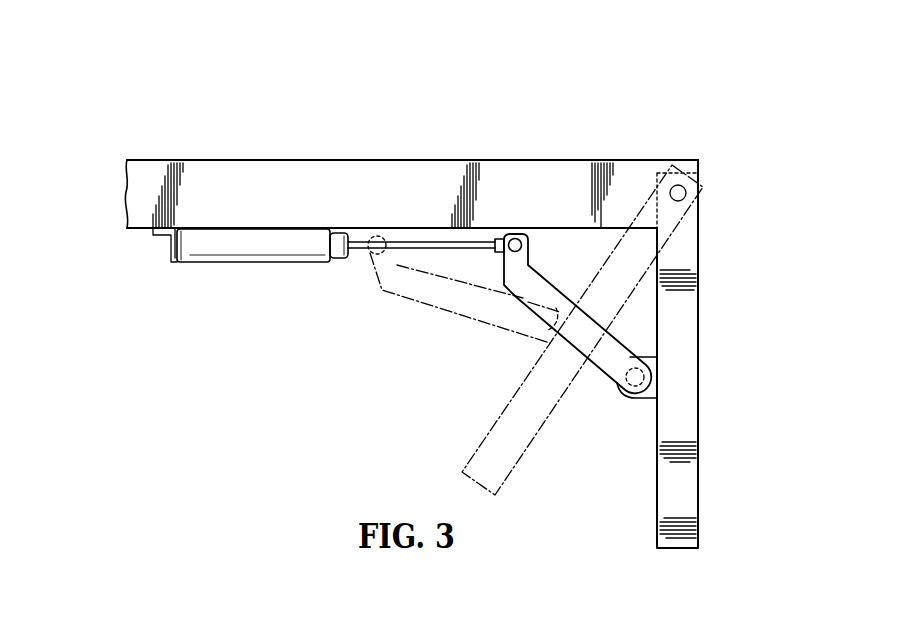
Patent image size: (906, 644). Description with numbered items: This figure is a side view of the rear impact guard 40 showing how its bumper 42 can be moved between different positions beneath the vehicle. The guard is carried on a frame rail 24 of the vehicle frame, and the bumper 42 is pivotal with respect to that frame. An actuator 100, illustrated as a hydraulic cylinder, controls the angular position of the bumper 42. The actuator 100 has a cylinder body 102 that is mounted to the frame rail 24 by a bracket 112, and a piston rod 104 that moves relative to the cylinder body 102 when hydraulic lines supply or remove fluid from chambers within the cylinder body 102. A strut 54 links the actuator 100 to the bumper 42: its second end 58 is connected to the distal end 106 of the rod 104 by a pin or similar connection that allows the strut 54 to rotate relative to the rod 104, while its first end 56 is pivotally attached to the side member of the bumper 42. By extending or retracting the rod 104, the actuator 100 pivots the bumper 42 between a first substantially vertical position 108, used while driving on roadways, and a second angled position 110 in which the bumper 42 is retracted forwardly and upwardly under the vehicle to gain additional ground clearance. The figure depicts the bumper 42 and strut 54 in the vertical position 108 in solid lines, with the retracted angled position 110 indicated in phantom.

The rear impact guard 40 is at (258, 134).
The frame rail 24 is at (265, 195).
The bumper 42 is at (683, 363).
The first substantially vertical position 108 is at (683, 259).
The bracket 112 is at (165, 232).
The actuator 100 is at (245, 248).
The cylinder body 102 is at (262, 247).
The piston rod 104 is at (357, 255).
The distal end 106 is at (499, 240).
The second end 58 is at (528, 232).
The strut 54 is at (531, 288).
The first end 56 is at (633, 398).
The second angled position 110 is at (478, 447).